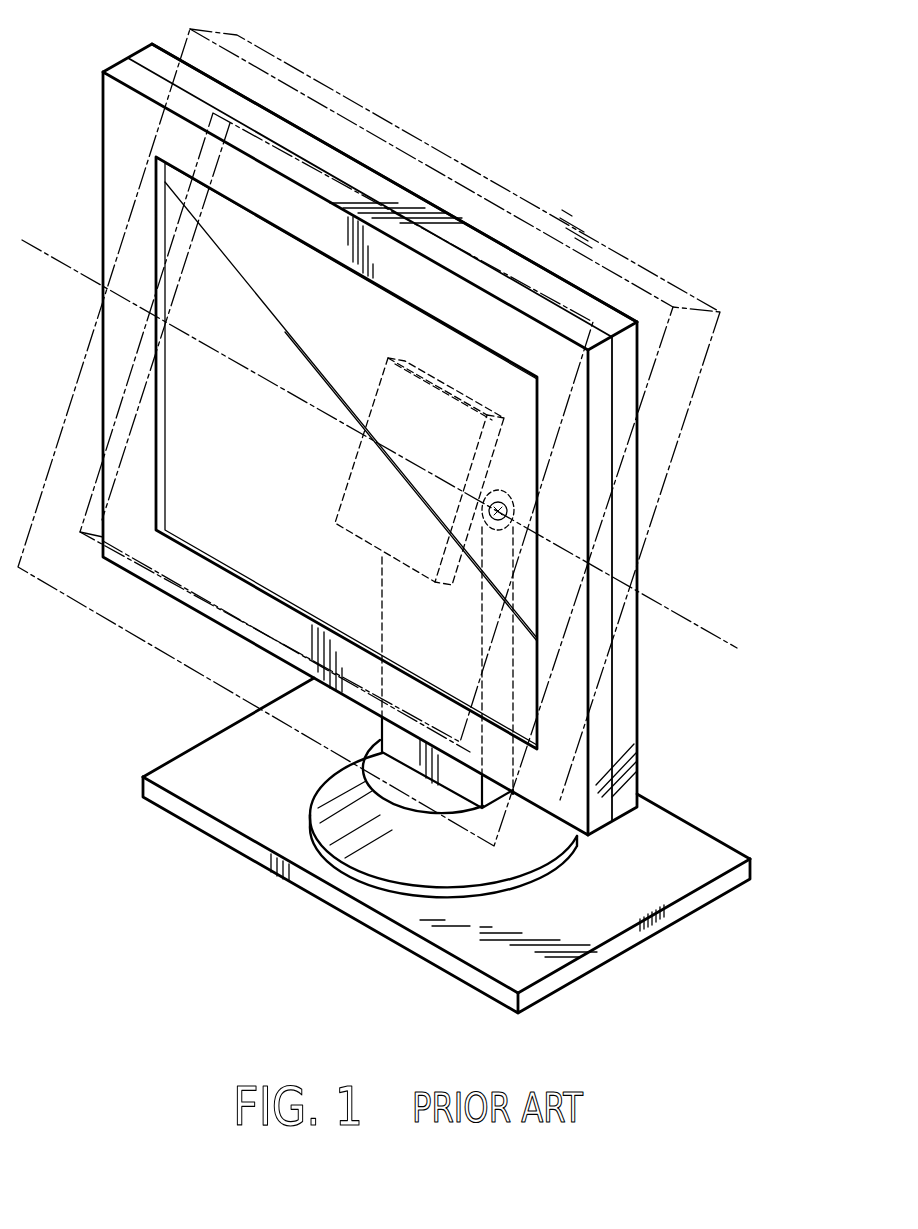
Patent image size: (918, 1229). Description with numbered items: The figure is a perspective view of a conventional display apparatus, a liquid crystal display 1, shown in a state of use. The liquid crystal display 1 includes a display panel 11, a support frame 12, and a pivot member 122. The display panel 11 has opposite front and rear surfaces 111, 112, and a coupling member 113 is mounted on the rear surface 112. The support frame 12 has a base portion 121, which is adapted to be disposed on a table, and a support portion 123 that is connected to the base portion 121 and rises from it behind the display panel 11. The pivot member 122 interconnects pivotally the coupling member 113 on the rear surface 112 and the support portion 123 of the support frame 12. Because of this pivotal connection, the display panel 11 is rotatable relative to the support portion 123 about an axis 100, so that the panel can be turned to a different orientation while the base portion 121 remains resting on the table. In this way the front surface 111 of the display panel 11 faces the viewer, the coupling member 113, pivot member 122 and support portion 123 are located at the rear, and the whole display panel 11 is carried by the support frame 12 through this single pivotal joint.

The liquid crystal display 1 is at (643, 90).
The display panel 11 is at (627, 302).
The front surface 111 is at (585, 384).
The rear surface 112 is at (530, 257).
The coupling member 113 is at (333, 527).
The support frame 12 is at (488, 790).
The base portion 121 is at (187, 750).
The pivot member 122 is at (514, 506).
The support portion 123 is at (499, 628).
The axis 100 is at (402, 437).